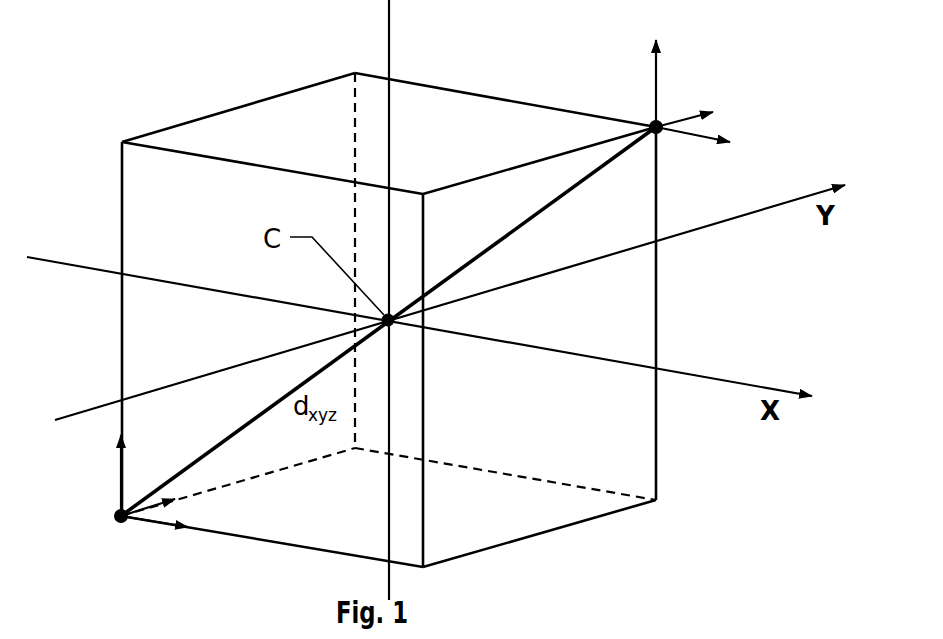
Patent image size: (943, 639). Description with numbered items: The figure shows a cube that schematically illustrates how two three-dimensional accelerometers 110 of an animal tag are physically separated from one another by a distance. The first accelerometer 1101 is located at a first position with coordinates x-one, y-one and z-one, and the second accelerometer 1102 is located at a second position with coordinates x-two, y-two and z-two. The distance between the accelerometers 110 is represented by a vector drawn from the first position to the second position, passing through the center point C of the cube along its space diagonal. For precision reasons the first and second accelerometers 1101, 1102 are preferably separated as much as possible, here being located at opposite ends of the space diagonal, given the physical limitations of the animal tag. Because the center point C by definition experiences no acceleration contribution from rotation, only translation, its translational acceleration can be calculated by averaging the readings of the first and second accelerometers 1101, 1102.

The accelerometers 110 is at (402, 301).
The first accelerometer 1101 is at (115, 499).
The second accelerometer 1102 is at (710, 117).